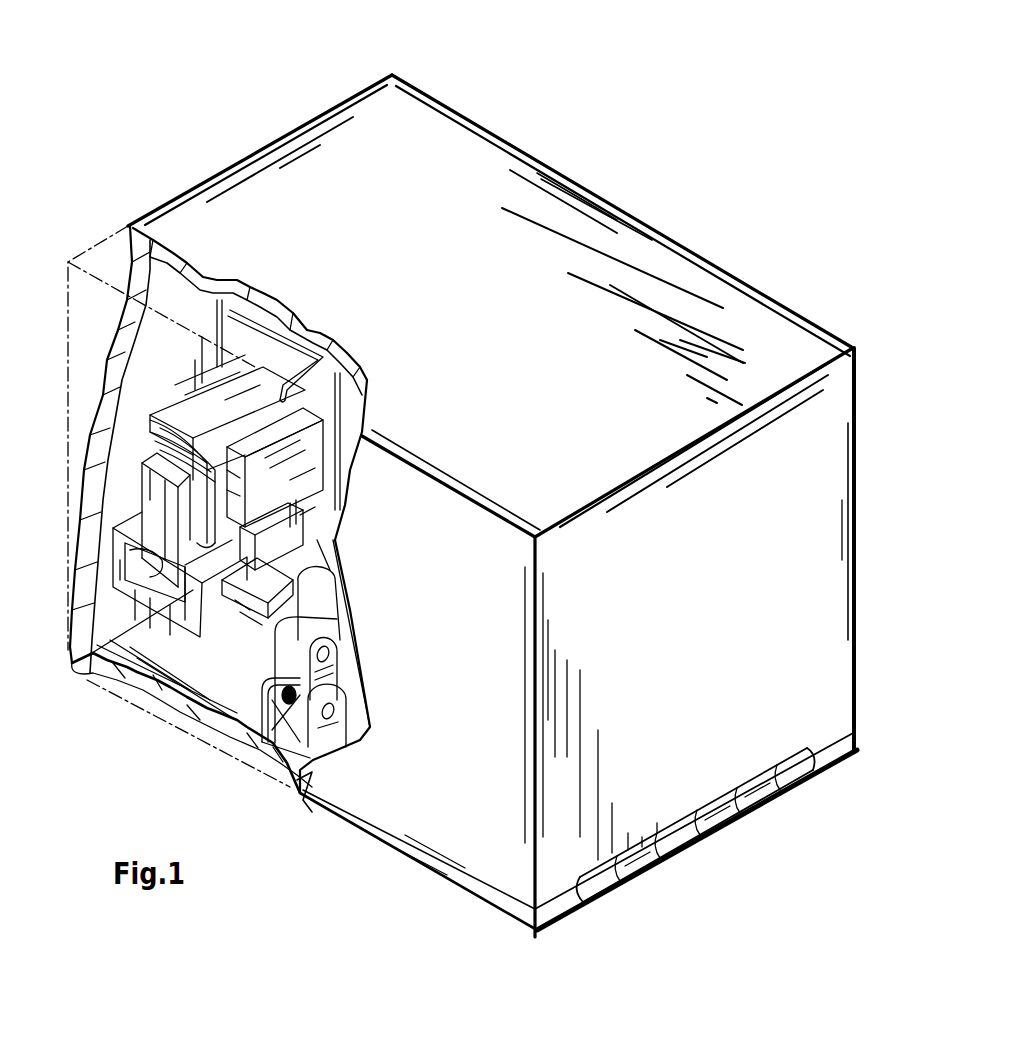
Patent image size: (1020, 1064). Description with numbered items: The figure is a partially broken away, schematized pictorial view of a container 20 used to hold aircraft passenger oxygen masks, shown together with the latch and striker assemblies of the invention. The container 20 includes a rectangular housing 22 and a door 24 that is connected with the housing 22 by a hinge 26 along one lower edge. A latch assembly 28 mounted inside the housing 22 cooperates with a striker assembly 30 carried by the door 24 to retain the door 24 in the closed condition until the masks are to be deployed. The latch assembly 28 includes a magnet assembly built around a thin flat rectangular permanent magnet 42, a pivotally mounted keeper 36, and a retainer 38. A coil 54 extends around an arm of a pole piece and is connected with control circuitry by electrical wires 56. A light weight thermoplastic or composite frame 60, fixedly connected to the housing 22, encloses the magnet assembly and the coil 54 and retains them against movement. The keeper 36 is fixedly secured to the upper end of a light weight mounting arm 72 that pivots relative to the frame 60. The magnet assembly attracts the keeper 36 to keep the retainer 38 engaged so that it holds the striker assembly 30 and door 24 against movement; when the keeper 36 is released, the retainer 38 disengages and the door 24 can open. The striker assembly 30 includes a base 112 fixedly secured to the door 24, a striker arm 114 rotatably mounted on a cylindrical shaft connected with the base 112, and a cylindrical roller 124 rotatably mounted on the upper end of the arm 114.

The container 20 is at (609, 120).
The housing 22 is at (719, 265).
The door 24 is at (95, 668).
The hinge 26 is at (722, 830).
The latch assembly 28 is at (138, 449).
The striker assembly 30 is at (282, 772).
The keeper 36 is at (160, 437).
The retainer 38 is at (305, 578).
The permanent magnet 42 is at (300, 515).
The coil 54 is at (232, 402).
The wires 56 is at (258, 312).
The frame 60 is at (307, 462).
The mounting arm 72 is at (160, 503).
The base 112 is at (338, 717).
The striker arm 114 is at (320, 630).
The roller 124 is at (258, 622).